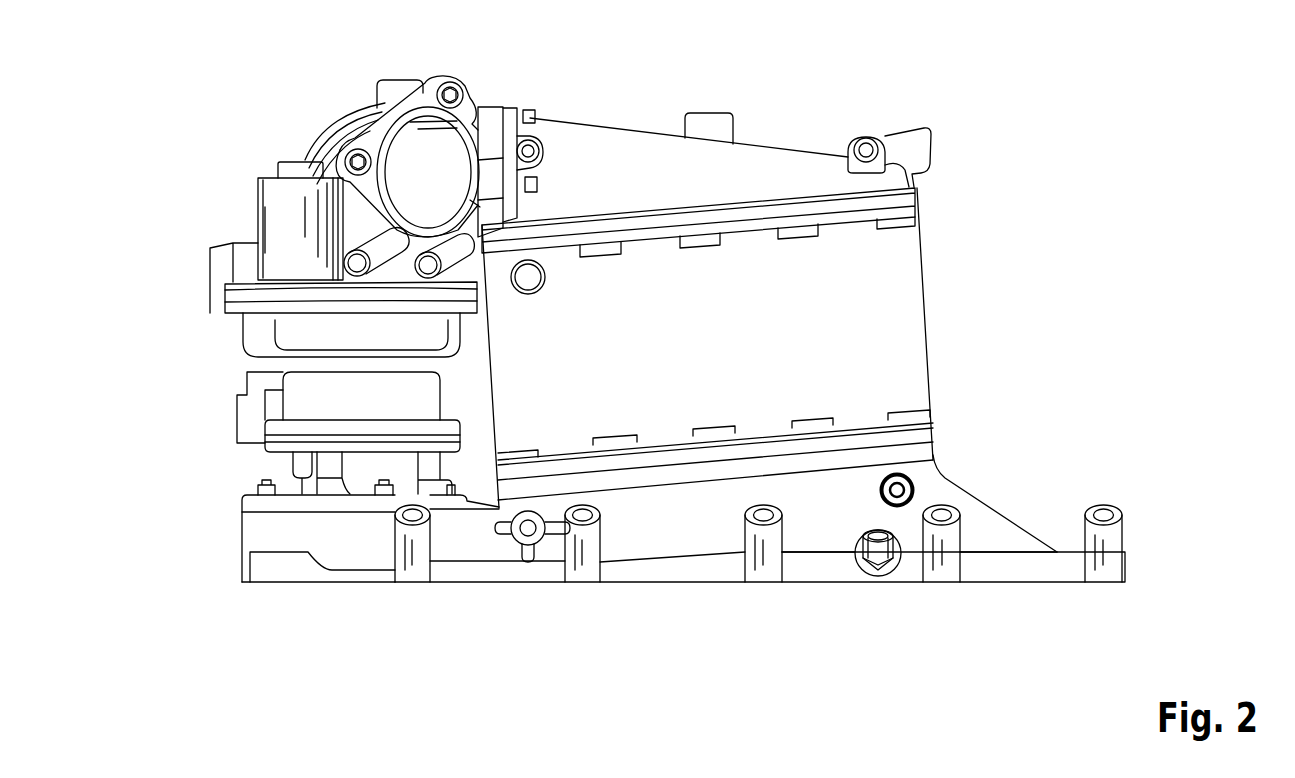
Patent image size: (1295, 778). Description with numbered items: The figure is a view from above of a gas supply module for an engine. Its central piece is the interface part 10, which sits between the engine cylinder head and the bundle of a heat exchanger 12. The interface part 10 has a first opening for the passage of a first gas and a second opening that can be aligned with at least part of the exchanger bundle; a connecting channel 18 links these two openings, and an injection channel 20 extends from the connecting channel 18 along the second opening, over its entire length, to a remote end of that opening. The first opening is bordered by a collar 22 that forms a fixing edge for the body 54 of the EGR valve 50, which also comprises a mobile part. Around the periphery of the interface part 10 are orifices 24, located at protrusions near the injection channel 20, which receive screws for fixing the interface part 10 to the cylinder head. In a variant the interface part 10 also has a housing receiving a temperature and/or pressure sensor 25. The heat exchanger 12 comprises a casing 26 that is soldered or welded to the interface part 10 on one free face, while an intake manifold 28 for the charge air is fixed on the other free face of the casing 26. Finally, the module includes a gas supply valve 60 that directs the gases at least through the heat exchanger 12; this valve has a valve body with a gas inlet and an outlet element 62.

The interface part 10 is at (1051, 573).
The heat exchanger 12 is at (907, 275).
The connecting channel 18 is at (475, 546).
The injection channel 20 is at (703, 540).
The collar 22 is at (275, 532).
The orifices 24 is at (587, 577).
The temperature and/or pressure sensor 25 is at (889, 571).
The casing 26 is at (908, 337).
The intake manifold 28 is at (625, 156).
The EGR valve 50 is at (328, 448).
The body 54 is at (358, 490).
The gas supply valve 60 is at (282, 204).
The outlet element 62 is at (408, 140).